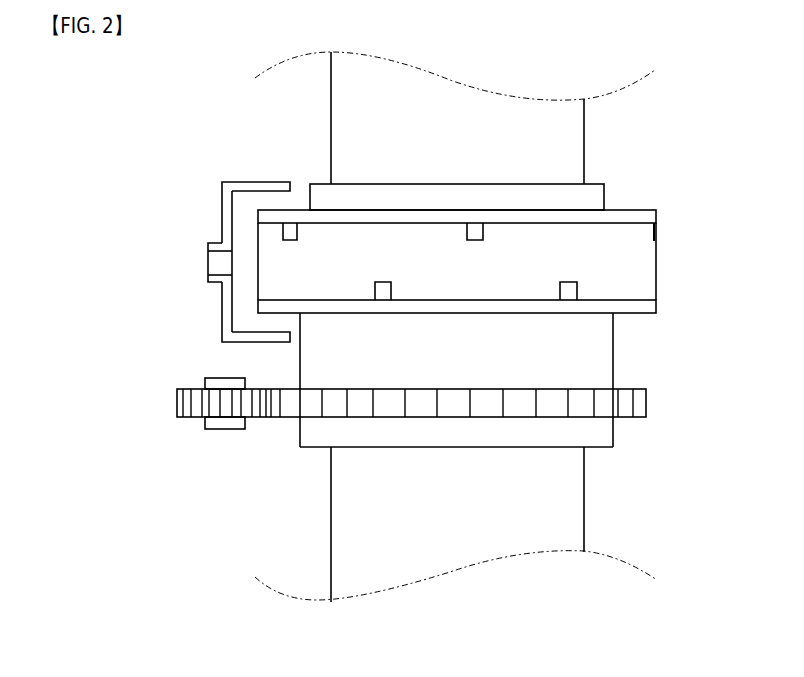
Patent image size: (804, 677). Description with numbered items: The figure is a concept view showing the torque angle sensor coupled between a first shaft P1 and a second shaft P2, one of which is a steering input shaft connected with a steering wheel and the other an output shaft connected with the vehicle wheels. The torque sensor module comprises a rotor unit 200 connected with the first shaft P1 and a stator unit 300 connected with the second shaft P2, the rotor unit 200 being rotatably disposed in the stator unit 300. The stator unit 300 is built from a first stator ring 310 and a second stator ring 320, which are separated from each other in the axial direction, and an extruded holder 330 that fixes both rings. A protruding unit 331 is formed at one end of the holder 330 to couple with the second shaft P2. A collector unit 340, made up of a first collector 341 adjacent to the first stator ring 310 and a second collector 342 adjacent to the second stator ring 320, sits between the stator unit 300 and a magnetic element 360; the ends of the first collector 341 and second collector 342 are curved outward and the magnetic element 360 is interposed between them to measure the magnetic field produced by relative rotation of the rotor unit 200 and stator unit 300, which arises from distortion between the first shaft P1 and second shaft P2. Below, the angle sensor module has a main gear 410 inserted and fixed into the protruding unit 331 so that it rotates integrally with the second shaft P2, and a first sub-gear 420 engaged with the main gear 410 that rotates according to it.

The rotor unit 200 is at (614, 193).
The stator unit 300 is at (515, 324).
The first stator ring 310 is at (651, 213).
The second stator ring 320 is at (651, 305).
The holder 330 is at (651, 263).
The protruding unit 331 is at (509, 380).
The collector unit 340 is at (221, 234).
The first collector 341 is at (250, 187).
The second collector 342 is at (228, 317).
The magnetic element 360 is at (222, 262).
The main gear 410 is at (648, 402).
The first sub-gear 420 is at (177, 402).
The first shaft P1 is at (565, 128).
The second shaft P2 is at (562, 508).